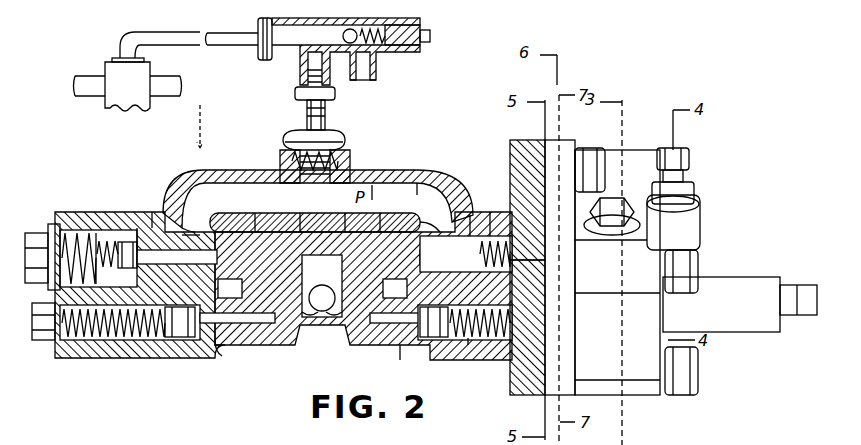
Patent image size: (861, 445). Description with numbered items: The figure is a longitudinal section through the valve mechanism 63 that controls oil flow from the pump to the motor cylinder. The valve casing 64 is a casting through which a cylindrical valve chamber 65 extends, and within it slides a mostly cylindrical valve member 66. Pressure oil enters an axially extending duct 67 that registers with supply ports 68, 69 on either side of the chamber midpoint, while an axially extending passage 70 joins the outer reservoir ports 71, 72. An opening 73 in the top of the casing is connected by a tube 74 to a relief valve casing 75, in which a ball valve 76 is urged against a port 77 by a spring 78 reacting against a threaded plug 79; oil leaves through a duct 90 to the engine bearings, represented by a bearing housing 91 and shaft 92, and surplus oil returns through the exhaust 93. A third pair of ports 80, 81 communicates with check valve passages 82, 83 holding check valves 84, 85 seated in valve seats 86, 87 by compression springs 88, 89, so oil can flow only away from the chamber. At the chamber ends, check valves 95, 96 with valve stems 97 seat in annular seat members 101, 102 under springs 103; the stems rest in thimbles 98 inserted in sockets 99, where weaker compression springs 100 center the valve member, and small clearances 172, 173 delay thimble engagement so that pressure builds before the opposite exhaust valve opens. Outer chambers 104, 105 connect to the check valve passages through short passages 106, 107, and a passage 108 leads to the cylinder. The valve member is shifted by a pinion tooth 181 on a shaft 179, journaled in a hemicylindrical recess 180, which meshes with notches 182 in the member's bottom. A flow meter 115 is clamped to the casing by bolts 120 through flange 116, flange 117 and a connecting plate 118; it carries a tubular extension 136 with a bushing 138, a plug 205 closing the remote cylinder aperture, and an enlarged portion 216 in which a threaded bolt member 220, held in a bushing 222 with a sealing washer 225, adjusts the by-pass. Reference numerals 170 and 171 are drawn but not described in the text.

The valve mechanism 63 is at (196, 115).
The valve casing 64 is at (187, 200).
The valve chamber 65 is at (236, 232).
The valve member 66 is at (340, 218).
The axially extending duct 67 is at (272, 212).
The fluid supply port 68 is at (262, 214).
The fluid supply port 69 is at (380, 214).
The axially extending passage 70 is at (374, 190).
The reservoir port 71 is at (182, 212).
The reservoir port 72 is at (428, 214).
The opening 73 is at (290, 150).
The tube 74 is at (324, 126).
The valve casing 75 is at (318, 25).
The ball valve 76 is at (350, 29).
The port 77 is at (343, 30).
The spring 78 is at (402, 25).
The plug 79 is at (426, 43).
The port 80 is at (230, 289).
The port 81 is at (395, 289).
The check valve passage 82 is at (122, 342).
The check valve passage 83 is at (470, 340).
The check valve 84 is at (190, 340).
The check valve 85 is at (428, 340).
The valve seat 86 is at (216, 345).
The valve seat 87 is at (404, 344).
The compression spring 88 is at (80, 348).
The compression spring 89 is at (498, 345).
The duct 90 is at (236, 40).
The bearing housing 91 is at (152, 71).
The shaft 92 is at (84, 97).
The exhaust 93 is at (377, 78).
The check valve 95 is at (110, 238).
The check valve 96 is at (470, 215).
The valve stem 97 is at (138, 200).
The thimble 98 is at (160, 212).
The socket 99 is at (440, 170).
The compression spring 100 is at (185, 264).
The annular seat member 101 is at (125, 212).
The annular seat member 102 is at (480, 212).
The compression spring 103 is at (68, 228).
The chamber 104 is at (97, 230).
The chamber 105 is at (542, 248).
The short passage 106 is at (122, 306).
The short passage 107 is at (474, 312).
The passage 108 is at (122, 268).
The flow meter 115 is at (655, 393).
The flange 116 is at (514, 140).
The flange 117 is at (565, 150).
The connecting plate 118 is at (552, 360).
The clamping bolt 120 is at (598, 178).
The tubular extension 136 is at (770, 332).
The bushing 138 is at (790, 318).
The boss 170 is at (282, 172).
The passage 171 is at (418, 192).
The clearance 172 is at (237, 308).
The clearance 173 is at (395, 308).
The shaft 179 is at (312, 312).
The hemicylindrical recess 180 is at (303, 318).
The pinion tooth 181 is at (326, 320).
The notch 182 is at (333, 320).
The plug 205 is at (640, 190).
The enlarged portion 216 is at (688, 230).
The threaded bolt member 220 is at (690, 162).
The bushing 222 is at (684, 178).
The sealing washer 225 is at (696, 206).